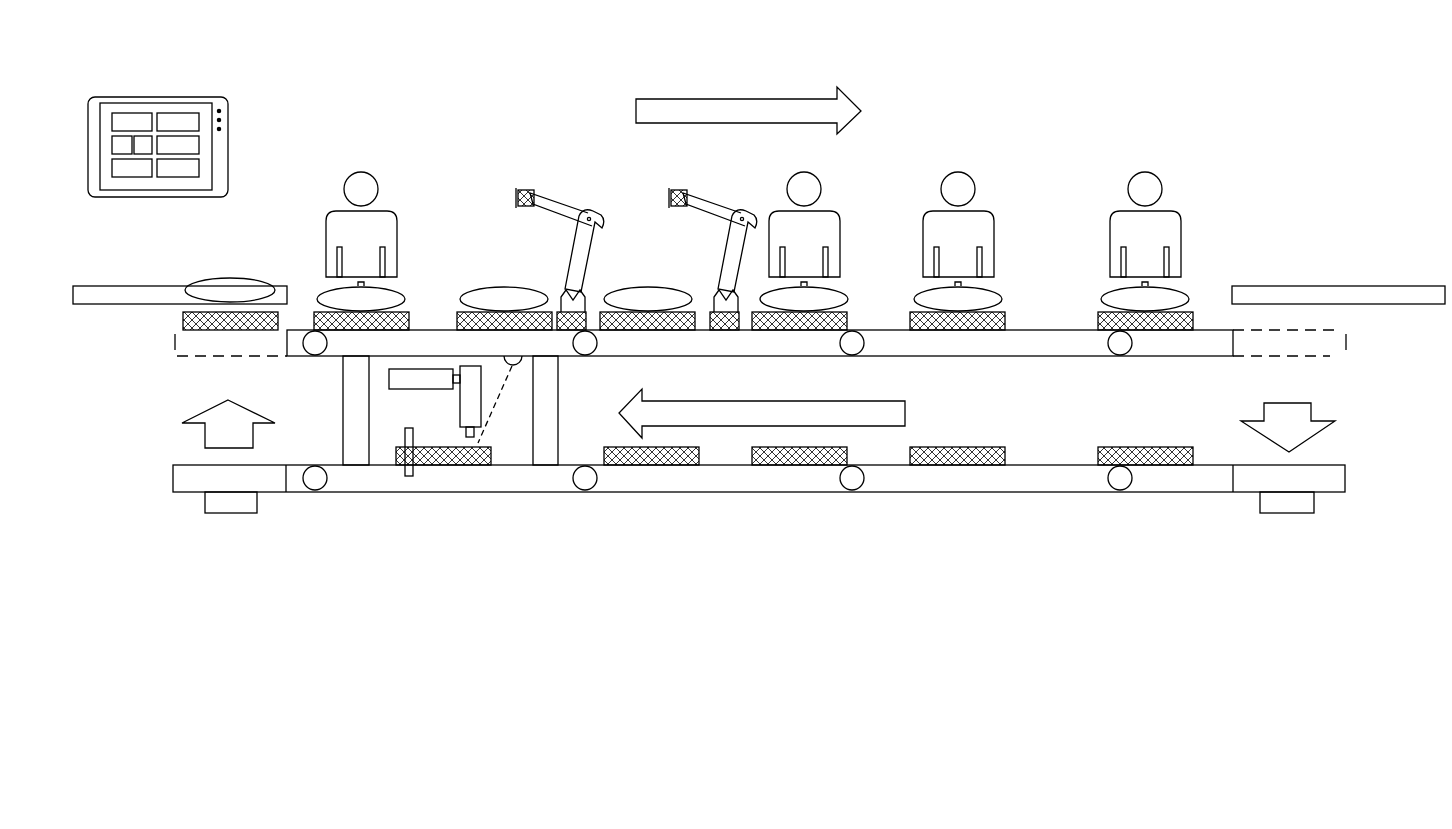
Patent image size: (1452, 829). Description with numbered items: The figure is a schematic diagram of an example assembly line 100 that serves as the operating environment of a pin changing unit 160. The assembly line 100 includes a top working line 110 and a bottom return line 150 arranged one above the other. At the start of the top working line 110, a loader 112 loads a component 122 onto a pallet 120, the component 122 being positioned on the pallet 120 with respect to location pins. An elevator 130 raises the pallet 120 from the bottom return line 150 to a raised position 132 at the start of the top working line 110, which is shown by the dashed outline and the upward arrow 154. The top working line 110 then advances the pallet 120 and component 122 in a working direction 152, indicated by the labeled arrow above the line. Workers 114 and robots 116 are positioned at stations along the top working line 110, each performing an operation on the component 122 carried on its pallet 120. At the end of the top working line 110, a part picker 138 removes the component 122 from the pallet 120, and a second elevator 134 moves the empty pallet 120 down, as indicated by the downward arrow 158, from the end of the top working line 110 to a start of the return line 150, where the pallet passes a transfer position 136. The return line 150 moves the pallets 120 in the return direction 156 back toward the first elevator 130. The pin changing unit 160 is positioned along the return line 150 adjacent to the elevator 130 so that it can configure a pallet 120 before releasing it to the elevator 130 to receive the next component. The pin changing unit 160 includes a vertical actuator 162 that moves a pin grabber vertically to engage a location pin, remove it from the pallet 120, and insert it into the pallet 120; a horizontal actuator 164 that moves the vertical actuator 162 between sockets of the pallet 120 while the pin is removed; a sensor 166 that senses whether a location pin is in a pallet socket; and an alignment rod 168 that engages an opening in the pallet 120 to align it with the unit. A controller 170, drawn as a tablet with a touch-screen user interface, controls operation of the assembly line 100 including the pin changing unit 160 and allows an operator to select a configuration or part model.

The assembly line 100 is at (424, 37).
The top working line 110 is at (1032, 356).
The loader 112 is at (166, 286).
The workers 114 is at (355, 172).
The robots 116 is at (542, 198).
The pallet 120 is at (182, 318).
The component 122 is at (236, 282).
The elevator 130 is at (173, 475).
The raised position 132 is at (182, 357).
The elevator 134 is at (1345, 472).
The pallet transfer position 136 is at (1330, 357).
The part picker 138 is at (1318, 286).
The bottom return line 150 is at (980, 493).
The working direction 152 is at (730, 99).
The up direction 154 is at (206, 412).
The return direction 156 is at (790, 401).
The down direction 158 is at (1262, 421).
The pin changing unit 160 is at (428, 526).
The vertical actuator 162 is at (460, 402).
The horizontal actuator 164 is at (388, 378).
The sensor 166 is at (516, 366).
The alignment rod 168 is at (404, 478).
The controller 170 is at (165, 99).